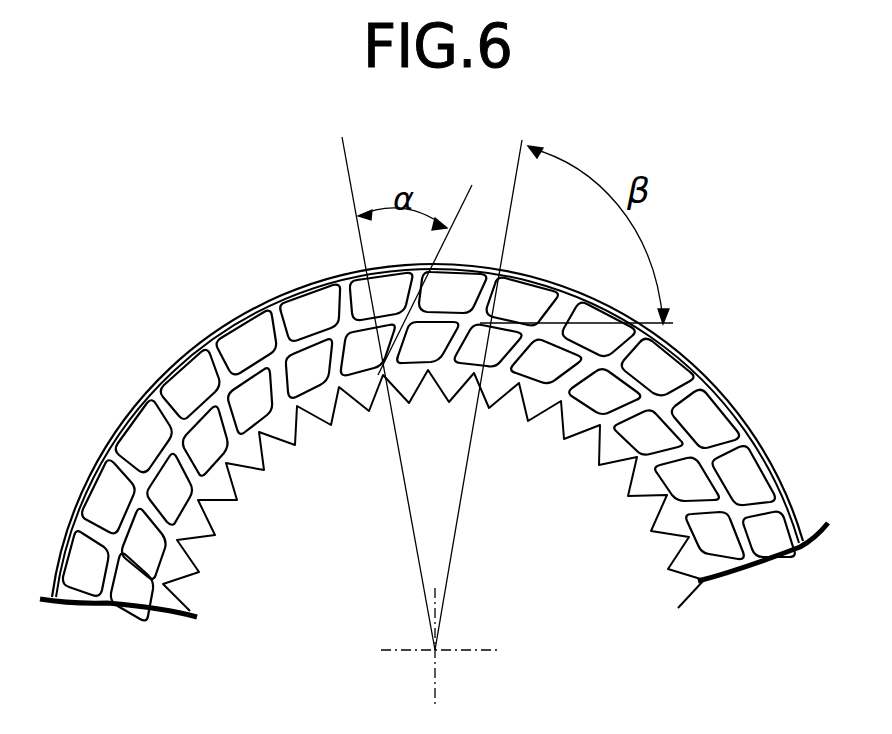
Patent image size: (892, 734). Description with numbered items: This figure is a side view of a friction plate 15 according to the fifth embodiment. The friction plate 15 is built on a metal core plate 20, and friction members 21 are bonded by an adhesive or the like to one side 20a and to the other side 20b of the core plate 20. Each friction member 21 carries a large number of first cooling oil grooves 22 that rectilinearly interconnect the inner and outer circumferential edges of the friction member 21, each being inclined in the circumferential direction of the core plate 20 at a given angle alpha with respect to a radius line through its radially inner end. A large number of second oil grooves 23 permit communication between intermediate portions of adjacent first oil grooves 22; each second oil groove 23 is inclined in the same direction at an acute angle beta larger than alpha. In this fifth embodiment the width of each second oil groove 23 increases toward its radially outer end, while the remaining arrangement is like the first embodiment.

The friction plate 15 is at (221, 307).
The core plate 20 is at (155, 386).
The one side 20a is at (103, 557).
The other side 20b is at (763, 552).
The friction member 21 is at (693, 477).
The first cooling oil groove 22 is at (338, 390).
The second oil groove 23 is at (512, 323).